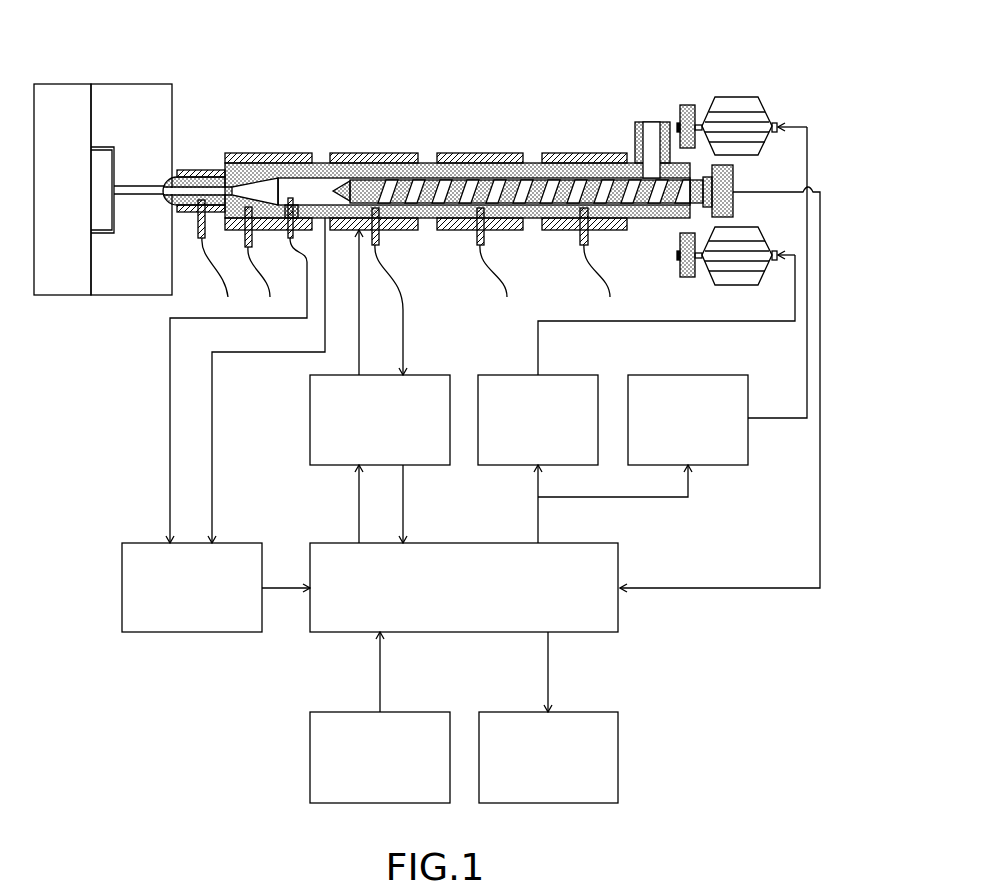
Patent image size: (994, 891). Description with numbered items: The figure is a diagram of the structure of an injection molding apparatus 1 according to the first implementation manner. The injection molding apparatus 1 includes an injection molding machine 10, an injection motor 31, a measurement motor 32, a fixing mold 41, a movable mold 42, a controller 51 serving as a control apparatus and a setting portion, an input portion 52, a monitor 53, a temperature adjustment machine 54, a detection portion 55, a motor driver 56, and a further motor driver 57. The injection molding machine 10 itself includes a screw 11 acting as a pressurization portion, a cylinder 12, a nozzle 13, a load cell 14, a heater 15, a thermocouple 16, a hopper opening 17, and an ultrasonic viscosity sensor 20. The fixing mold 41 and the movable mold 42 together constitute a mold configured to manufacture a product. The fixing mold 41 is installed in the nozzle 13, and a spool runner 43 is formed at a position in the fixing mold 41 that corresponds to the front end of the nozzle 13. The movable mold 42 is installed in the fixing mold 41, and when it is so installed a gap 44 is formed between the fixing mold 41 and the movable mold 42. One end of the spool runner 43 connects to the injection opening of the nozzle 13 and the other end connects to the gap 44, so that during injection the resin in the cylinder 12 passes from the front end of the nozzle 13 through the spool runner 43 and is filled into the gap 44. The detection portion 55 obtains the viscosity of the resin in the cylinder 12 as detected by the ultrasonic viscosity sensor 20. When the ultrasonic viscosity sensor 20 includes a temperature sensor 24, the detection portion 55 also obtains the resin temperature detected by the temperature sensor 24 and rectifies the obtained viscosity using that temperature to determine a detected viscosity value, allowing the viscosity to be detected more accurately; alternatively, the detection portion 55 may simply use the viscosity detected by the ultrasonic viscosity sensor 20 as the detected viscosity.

The injection molding apparatus 1 is at (710, 42).
The injection molding machine 10 is at (543, 117).
The screw 11 is at (362, 190).
The cylinder 12 is at (243, 153).
The nozzle 13 is at (205, 170).
The load cell 14 is at (738, 185).
The heater 15 is at (478, 153).
The thermocouple 16 is at (380, 242).
The hopper opening 17 is at (649, 122).
The ultrasonic viscosity sensor 20 is at (293, 205).
The temperature sensor 24 is at (278, 218).
The injection motor 31 is at (745, 97).
The measurement motor 32 is at (745, 288).
The fixing mold 41 is at (162, 100).
The movable mold 42 is at (58, 100).
The spool runner 43 is at (130, 188).
The gap 44 is at (99, 150).
The controller 51 is at (588, 543).
The input portion 52 is at (420, 712).
The monitor 53 is at (588, 712).
The temperature adjustment machine 54 is at (420, 375).
The detection portion 55 is at (230, 543).
The motor driver 56 is at (570, 375).
The motor driver 57 is at (720, 375).